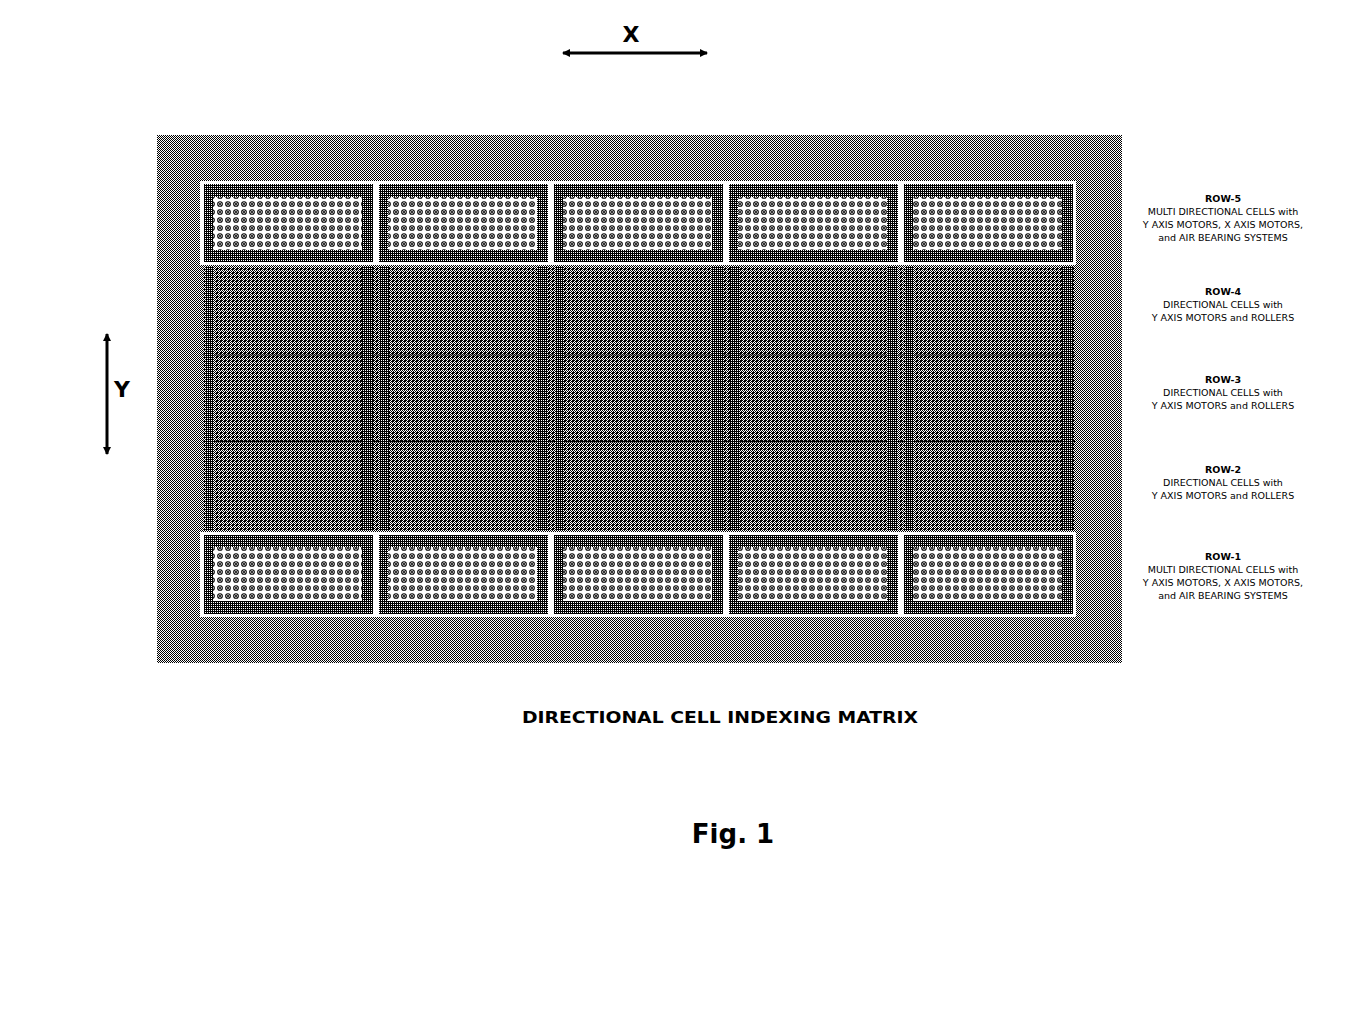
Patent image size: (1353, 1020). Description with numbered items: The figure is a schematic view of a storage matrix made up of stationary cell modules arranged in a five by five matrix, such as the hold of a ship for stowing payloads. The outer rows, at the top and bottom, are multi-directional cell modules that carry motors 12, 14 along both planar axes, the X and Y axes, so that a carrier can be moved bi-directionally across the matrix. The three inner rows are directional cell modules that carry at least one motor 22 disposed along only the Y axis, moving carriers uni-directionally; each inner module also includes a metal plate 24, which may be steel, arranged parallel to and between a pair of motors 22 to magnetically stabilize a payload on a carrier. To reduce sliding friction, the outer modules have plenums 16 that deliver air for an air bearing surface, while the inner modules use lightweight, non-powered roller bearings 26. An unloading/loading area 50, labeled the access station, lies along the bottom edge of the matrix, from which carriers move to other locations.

The motor 12 is at (609, 367).
The motor 14 is at (700, 250).
The plenums 16 is at (256, 213).
The motor 22 is at (638, 336).
The metal plate 24 is at (926, 137).
The roller bearings 26 is at (1050, 137).
The unloading/loading area 50 is at (690, 648).